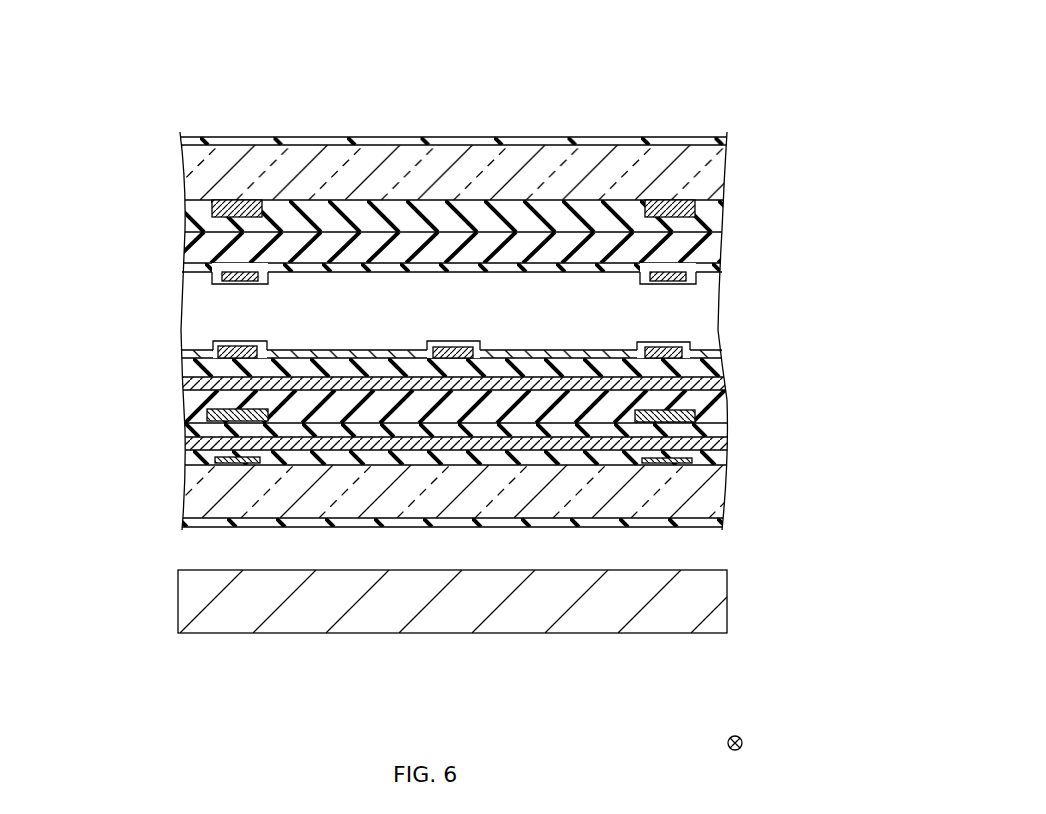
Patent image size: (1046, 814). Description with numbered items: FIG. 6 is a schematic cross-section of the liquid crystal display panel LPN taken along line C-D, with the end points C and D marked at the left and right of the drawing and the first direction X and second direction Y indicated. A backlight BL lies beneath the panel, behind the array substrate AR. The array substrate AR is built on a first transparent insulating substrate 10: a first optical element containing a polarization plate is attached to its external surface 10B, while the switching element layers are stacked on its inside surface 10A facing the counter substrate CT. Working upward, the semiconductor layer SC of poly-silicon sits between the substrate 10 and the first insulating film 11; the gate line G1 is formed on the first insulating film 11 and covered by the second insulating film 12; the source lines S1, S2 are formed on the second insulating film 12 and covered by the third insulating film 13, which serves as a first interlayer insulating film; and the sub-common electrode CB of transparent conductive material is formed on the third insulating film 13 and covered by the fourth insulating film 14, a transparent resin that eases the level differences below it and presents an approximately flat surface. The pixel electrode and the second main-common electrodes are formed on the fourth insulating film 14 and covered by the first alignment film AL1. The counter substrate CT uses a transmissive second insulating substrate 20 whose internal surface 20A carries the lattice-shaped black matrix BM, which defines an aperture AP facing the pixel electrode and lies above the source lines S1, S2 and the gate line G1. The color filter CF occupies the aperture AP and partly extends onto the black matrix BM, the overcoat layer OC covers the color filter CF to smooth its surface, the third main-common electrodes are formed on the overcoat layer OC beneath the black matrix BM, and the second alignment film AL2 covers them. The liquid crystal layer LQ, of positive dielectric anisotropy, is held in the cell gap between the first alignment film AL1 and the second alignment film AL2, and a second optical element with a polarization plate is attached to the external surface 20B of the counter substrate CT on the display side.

The aperture AP is at (645, 200).
The external surface of the counter substrate 20B is at (227, 141).
The liquid crystal display panel LPN is at (736, 113).
The counter substrate CT is at (184, 175).
The internal surface of the second insulating substrate 20A is at (210, 207).
The black matrix BM is at (216, 236).
The inner surface of first substrate 10A is at (205, 448).
The array substrate AR is at (184, 477).
The line C-D end point C is at (160, 521).
The line C-D end point D is at (741, 521).
The external surface of the array substrate 10B is at (197, 532).
The source line S1 is at (236, 423).
The semiconductor layer SC is at (233, 466).
The sub-common electrode CB is at (447, 392).
The source line S2 is at (667, 424).
The second insulating substrate 20 is at (715, 170).
The color filter CF is at (720, 226).
The overcoat layer OC is at (718, 250).
The second alignment film AL2 is at (720, 272).
The liquid crystal layer LQ is at (712, 322).
The first alignment film AL1 is at (712, 348).
The fourth insulating film 14 is at (727, 368).
The third insulating film 13 is at (727, 386).
The second insulating film 12 is at (727, 410).
The gate line G1 is at (727, 445).
The first insulating film 11 is at (727, 462).
The first transparent insulating substrate 10 is at (712, 497).
The backlight BL is at (722, 592).
The first direction X is at (690, 743).
The second direction Y is at (734, 759).